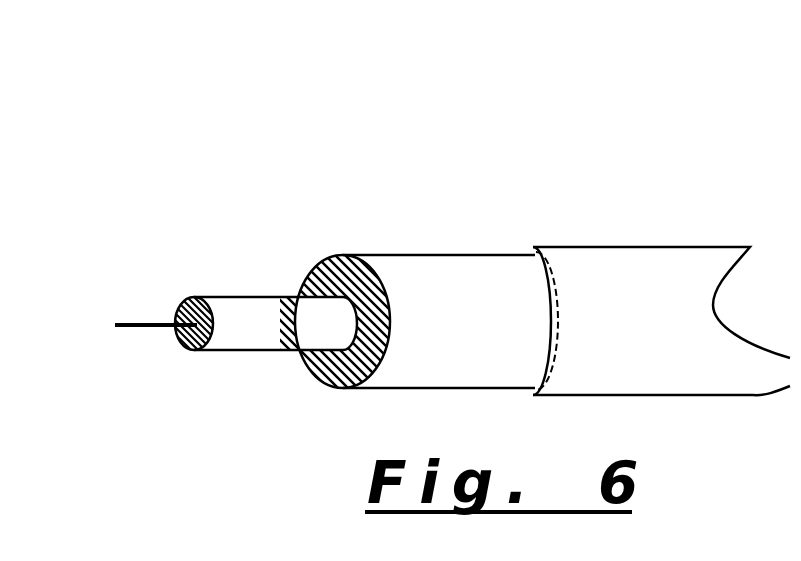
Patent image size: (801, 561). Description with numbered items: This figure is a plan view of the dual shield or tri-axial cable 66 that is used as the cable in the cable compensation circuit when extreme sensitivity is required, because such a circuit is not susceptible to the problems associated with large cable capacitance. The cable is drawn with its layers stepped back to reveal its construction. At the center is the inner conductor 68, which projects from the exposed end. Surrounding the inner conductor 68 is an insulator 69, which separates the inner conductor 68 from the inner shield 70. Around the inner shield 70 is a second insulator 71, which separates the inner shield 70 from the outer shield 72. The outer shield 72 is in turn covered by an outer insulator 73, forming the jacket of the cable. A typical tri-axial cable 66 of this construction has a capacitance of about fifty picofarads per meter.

The tri-axial cable 66 is at (148, 110).
The inner conductor 68 is at (160, 320).
The insulator 69 is at (187, 300).
The inner shield 70 is at (268, 312).
The insulator 71 is at (330, 262).
The outer shield 72 is at (425, 268).
The insulator 73 is at (625, 293).